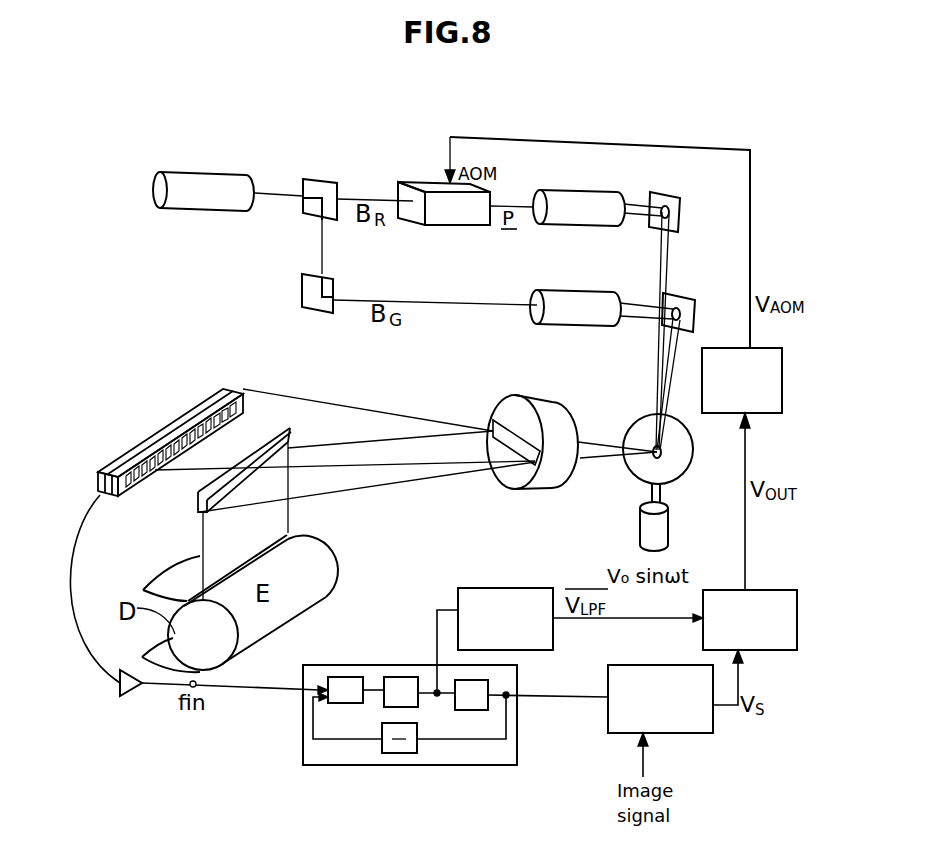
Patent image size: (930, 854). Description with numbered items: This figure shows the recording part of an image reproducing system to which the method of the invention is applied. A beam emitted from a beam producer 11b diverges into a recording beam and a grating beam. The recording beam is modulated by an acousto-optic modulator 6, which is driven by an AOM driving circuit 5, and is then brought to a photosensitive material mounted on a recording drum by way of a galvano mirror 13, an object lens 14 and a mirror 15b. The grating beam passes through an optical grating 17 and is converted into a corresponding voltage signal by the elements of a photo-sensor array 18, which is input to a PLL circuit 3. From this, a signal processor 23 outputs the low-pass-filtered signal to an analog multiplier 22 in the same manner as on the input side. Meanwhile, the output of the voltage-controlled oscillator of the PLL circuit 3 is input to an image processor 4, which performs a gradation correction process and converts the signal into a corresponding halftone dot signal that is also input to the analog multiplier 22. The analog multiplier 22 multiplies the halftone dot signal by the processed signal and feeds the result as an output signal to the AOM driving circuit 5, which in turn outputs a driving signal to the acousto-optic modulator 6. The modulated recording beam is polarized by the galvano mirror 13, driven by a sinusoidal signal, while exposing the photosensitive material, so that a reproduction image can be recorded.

The PLL circuit 3 is at (490, 757).
The image processor 4 is at (690, 733).
The AOM driving circuit 5 is at (773, 368).
The acousto-optic modulator 6 is at (450, 215).
The beam producer 11b is at (205, 200).
The galvano mirror 13 is at (685, 452).
The object lens 14 is at (538, 480).
The mirror 15b is at (247, 460).
The optical grating 17 is at (243, 392).
The photo-sensor array 18 is at (168, 422).
The analog multiplier 22 is at (797, 613).
The signal processor 23 is at (553, 621).